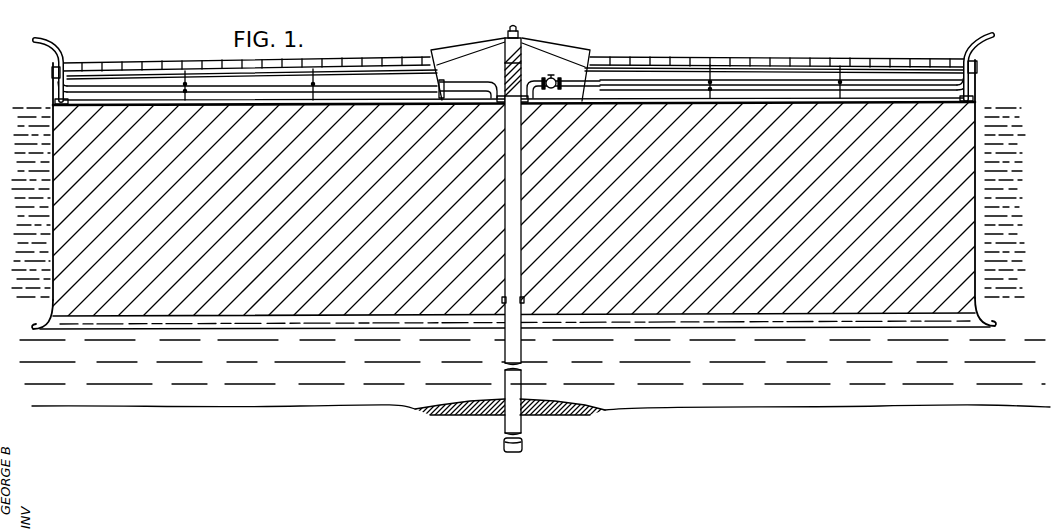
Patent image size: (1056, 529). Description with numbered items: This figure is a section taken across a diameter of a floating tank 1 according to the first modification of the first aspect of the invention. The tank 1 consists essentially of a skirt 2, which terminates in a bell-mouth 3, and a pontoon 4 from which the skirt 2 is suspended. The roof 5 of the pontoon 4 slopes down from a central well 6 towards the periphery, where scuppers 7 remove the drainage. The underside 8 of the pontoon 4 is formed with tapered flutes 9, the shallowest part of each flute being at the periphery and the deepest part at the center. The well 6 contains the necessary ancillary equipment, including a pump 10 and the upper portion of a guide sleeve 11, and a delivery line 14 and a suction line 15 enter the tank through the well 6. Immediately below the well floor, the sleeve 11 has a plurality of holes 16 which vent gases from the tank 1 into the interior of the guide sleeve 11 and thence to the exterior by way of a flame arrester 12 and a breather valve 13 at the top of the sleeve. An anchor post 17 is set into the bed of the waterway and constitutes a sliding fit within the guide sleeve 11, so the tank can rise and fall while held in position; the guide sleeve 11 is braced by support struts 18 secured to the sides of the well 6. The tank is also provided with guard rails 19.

The tank 1 is at (141, 320).
The skirt 2 is at (53, 244).
The bell-mouth 3 is at (44, 328).
The pontoon 4 is at (55, 96).
The roof 5 is at (128, 75).
The central well 6 is at (442, 60).
The scuppers 7 is at (52, 80).
The underside 8 is at (140, 107).
The tapered flutes 9 is at (405, 97).
The pump 10 is at (551, 78).
The guide sleeve 11 is at (513, 58).
The flame arrester 12 is at (518, 34).
The breather valve 13 is at (510, 29).
The delivery line 14 is at (468, 83).
The suction line 15 is at (778, 80).
The holes 16 is at (500, 103).
The anchor post 17 is at (512, 351).
The support struts 18 is at (486, 47).
The guard rails 19 is at (189, 70).